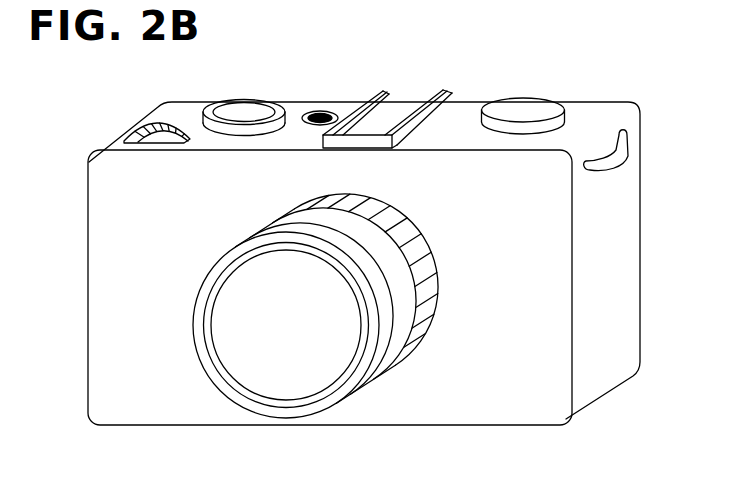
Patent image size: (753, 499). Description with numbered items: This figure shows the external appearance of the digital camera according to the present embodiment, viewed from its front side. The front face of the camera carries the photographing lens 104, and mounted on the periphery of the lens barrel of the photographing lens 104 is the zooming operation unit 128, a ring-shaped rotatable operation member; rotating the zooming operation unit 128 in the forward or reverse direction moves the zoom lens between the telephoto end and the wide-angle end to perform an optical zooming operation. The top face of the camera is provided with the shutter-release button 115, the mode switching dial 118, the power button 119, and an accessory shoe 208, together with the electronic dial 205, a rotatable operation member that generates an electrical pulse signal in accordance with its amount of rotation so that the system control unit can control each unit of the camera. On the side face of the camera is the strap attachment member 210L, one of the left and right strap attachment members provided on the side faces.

The photographing lens 104 is at (207, 372).
The shutter-release button 115 is at (243, 106).
The mode switching dial 118 is at (517, 108).
The power button 119 is at (318, 112).
The zooming operation unit 128 is at (398, 343).
The electronic dial 205 is at (152, 124).
The accessory shoe 208 is at (376, 92).
The strap attachment member 210L is at (628, 155).